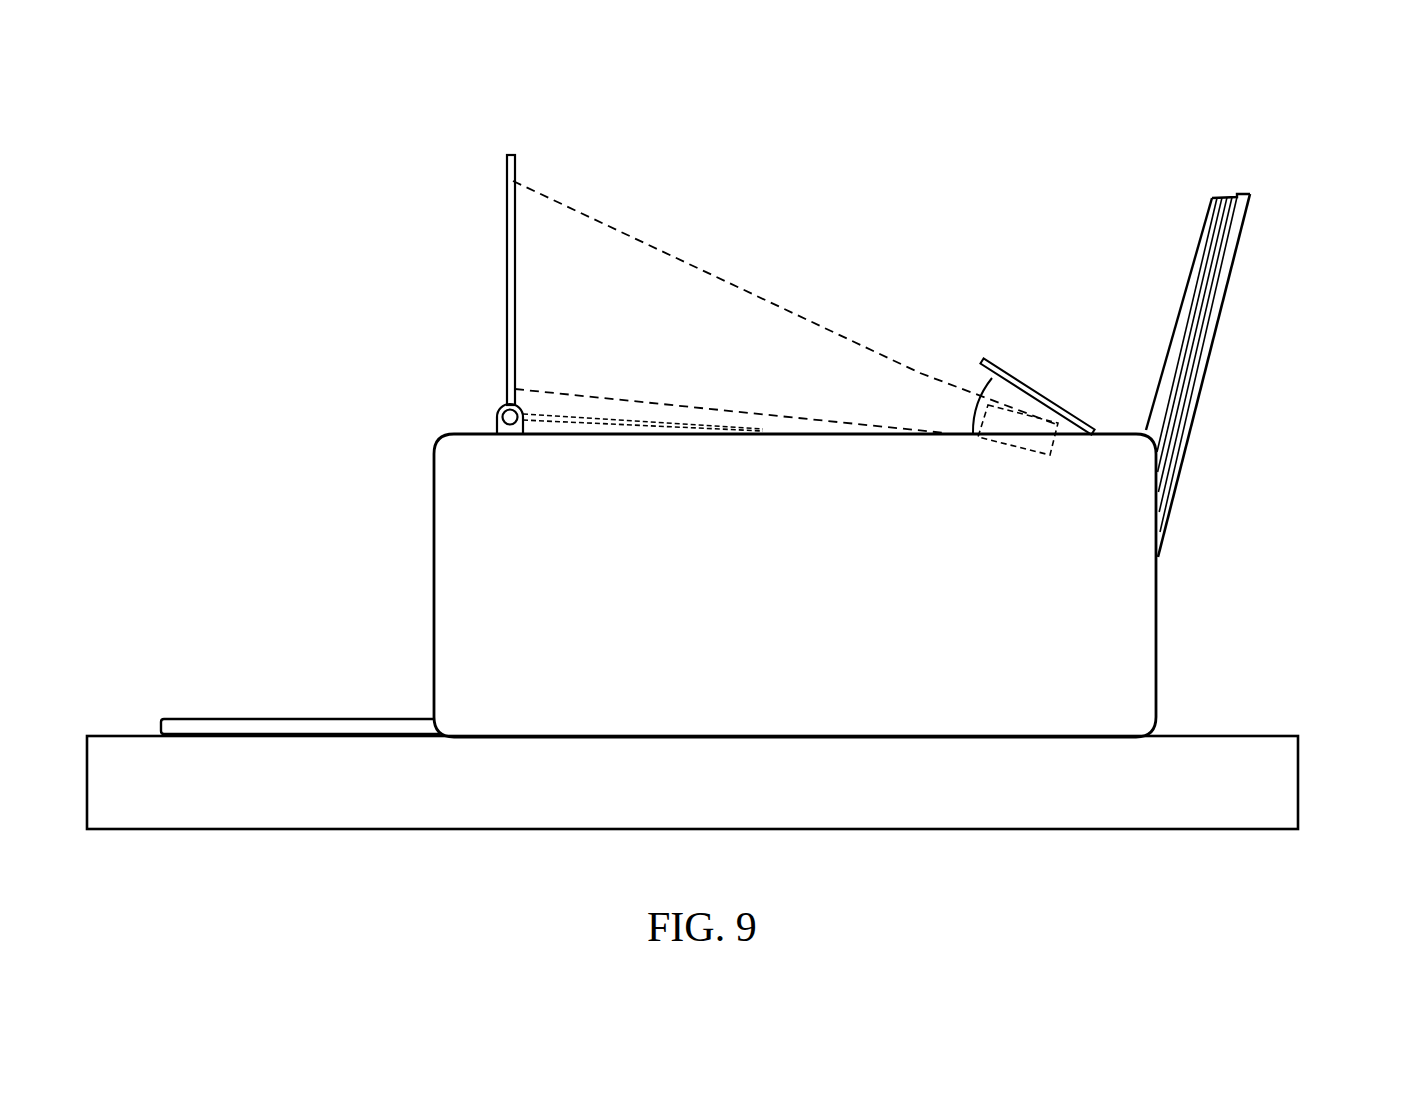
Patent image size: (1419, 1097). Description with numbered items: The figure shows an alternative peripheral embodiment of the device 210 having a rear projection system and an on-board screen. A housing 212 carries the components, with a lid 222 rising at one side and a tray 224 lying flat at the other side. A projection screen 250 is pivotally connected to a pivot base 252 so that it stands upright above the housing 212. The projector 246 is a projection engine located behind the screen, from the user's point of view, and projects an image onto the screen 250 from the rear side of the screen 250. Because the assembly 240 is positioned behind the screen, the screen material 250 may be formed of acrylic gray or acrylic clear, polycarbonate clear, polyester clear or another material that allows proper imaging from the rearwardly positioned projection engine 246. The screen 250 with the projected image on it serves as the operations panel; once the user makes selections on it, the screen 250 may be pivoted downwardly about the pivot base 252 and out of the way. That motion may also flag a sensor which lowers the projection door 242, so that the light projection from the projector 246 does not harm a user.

The electronic device 210 is at (323, 163).
The housing 212 is at (1190, 644).
The lid / display cover 222 is at (1210, 320).
The tray / keyboard panel 224 is at (270, 727).
The assembly 240 is at (1050, 372).
The projection door 242 is at (1003, 365).
The projector 246 is at (1012, 445).
The projection screen 250 is at (507, 290).
The pivot base 252 is at (497, 417).